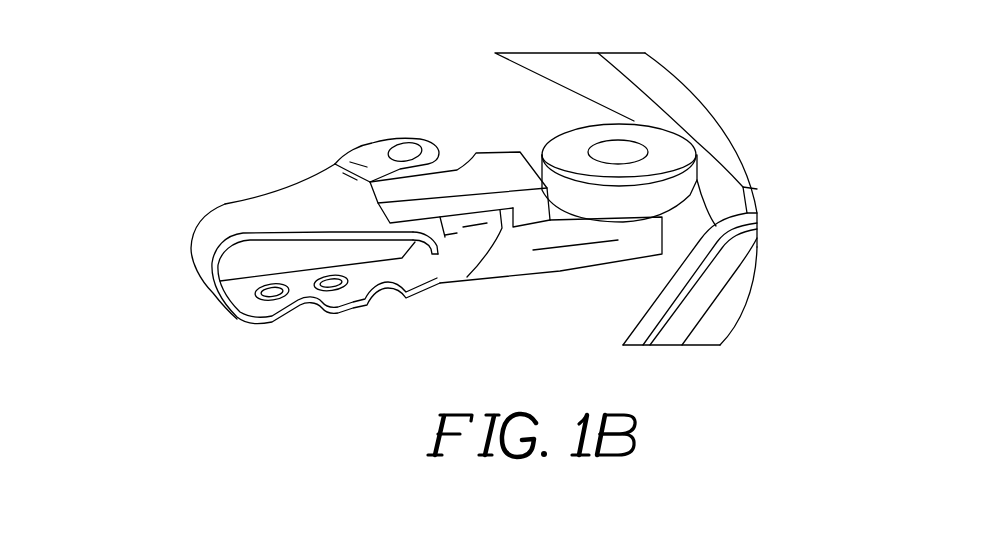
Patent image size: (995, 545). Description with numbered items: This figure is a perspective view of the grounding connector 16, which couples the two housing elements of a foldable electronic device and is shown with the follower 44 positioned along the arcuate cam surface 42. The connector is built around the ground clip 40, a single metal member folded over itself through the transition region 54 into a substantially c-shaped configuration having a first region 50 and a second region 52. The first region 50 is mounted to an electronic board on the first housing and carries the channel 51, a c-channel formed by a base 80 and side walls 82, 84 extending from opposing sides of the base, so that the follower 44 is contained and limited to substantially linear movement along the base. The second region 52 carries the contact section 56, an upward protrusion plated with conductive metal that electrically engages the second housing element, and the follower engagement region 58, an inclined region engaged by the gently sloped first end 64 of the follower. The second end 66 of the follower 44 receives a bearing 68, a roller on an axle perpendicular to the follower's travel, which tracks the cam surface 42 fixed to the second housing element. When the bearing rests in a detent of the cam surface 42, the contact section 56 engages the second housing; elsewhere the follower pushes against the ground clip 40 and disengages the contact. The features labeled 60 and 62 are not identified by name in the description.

The grounding connector 16 is at (133, 333).
The ground clip 40 is at (243, 322).
The cam surface 42 is at (703, 97).
The follower 44 is at (540, 228).
The first region 50 is at (351, 312).
The channel 51 is at (594, 264).
The second region 52 is at (282, 189).
The transition region 54 is at (190, 250).
The contact section 56 is at (395, 138).
The follower engagement region 58 is at (414, 258).
The top facet of arm 60 is at (647, 68).
The direction arrow 62 is at (763, 208).
The first end 64 is at (337, 166).
The second end 66 is at (744, 162).
The bearing 68 is at (552, 140).
The base 80 is at (457, 243).
The side wall 82 is at (654, 244).
The side wall 84 is at (459, 217).